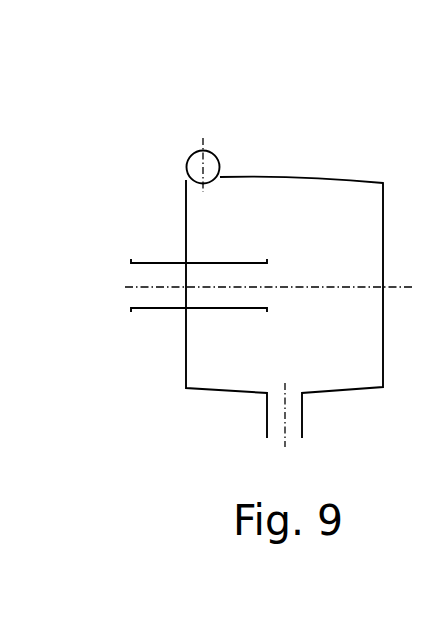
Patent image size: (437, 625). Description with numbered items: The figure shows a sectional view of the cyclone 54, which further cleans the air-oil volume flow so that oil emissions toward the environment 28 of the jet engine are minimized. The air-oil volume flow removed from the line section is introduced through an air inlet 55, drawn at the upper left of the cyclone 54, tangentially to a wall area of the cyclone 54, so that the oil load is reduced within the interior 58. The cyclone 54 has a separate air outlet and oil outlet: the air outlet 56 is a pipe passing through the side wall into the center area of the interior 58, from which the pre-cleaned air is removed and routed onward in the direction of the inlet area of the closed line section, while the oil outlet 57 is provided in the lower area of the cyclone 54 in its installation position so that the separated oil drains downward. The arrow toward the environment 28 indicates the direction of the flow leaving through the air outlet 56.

The cyclone 54 is at (383, 152).
The air inlet 55 is at (210, 148).
The air outlet 56 is at (152, 308).
The oil outlet 57 is at (267, 410).
The interior 58 is at (300, 230).
The environment 28 is at (117, 287).